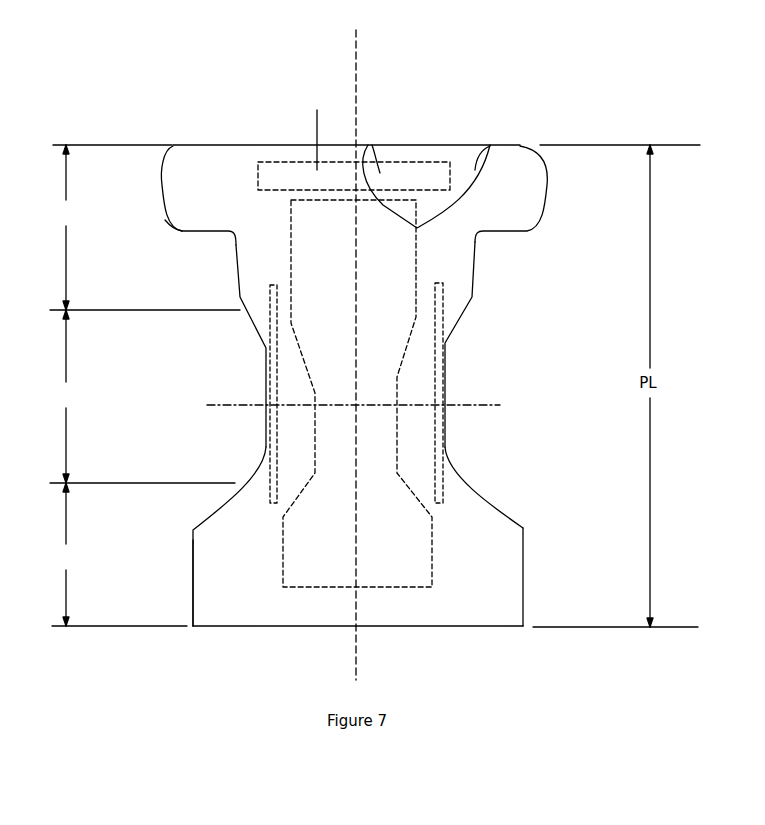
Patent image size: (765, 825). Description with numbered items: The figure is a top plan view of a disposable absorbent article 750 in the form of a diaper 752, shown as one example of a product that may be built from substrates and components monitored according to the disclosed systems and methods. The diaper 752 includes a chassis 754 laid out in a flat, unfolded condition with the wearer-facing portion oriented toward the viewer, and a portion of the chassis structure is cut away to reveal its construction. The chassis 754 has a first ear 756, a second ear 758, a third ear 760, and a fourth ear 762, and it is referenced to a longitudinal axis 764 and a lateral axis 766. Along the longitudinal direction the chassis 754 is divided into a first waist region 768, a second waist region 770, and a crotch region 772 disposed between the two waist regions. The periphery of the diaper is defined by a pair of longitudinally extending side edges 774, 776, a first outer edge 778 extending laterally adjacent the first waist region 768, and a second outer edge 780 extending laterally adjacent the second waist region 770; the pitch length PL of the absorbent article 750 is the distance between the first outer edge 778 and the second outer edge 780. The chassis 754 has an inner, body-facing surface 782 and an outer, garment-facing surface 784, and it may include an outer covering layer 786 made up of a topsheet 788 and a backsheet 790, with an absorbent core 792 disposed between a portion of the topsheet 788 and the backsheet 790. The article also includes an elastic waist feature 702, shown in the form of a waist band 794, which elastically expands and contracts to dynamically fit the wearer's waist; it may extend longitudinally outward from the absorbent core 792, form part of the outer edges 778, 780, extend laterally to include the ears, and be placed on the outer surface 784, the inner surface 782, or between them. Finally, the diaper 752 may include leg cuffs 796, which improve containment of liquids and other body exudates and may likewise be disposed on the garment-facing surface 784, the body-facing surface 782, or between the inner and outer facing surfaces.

The elastic waist feature 702 is at (380, 173).
The disposable absorbent article 750 is at (405, 110).
The diaper 752 is at (230, 92).
The chassis 754 is at (230, 163).
The first ear 756 is at (505, 222).
The second ear 758 is at (175, 186).
The third ear 760 is at (490, 547).
The fourth ear 762 is at (208, 577).
The longitudinal axis 764 is at (360, 672).
The lateral axis 766 is at (480, 405).
The first waist region 768 is at (57, 227).
The second waist region 770 is at (57, 554).
The crotch region 772 is at (57, 396).
The side edge 774 is at (470, 298).
The side edge 776 is at (236, 262).
The first outer edge 778 is at (293, 143).
The second outer edge 780 is at (263, 627).
The inner, body-facing surface 782 is at (192, 213).
The outer, garment-facing surface 784 is at (472, 155).
The outer covering layer 786 is at (465, 522).
The topsheet 788 is at (230, 520).
The backsheet 790 is at (440, 153).
The absorbent core 792 is at (412, 210).
The waist band 794 is at (307, 122).
The leg cuffs 796 is at (270, 362).